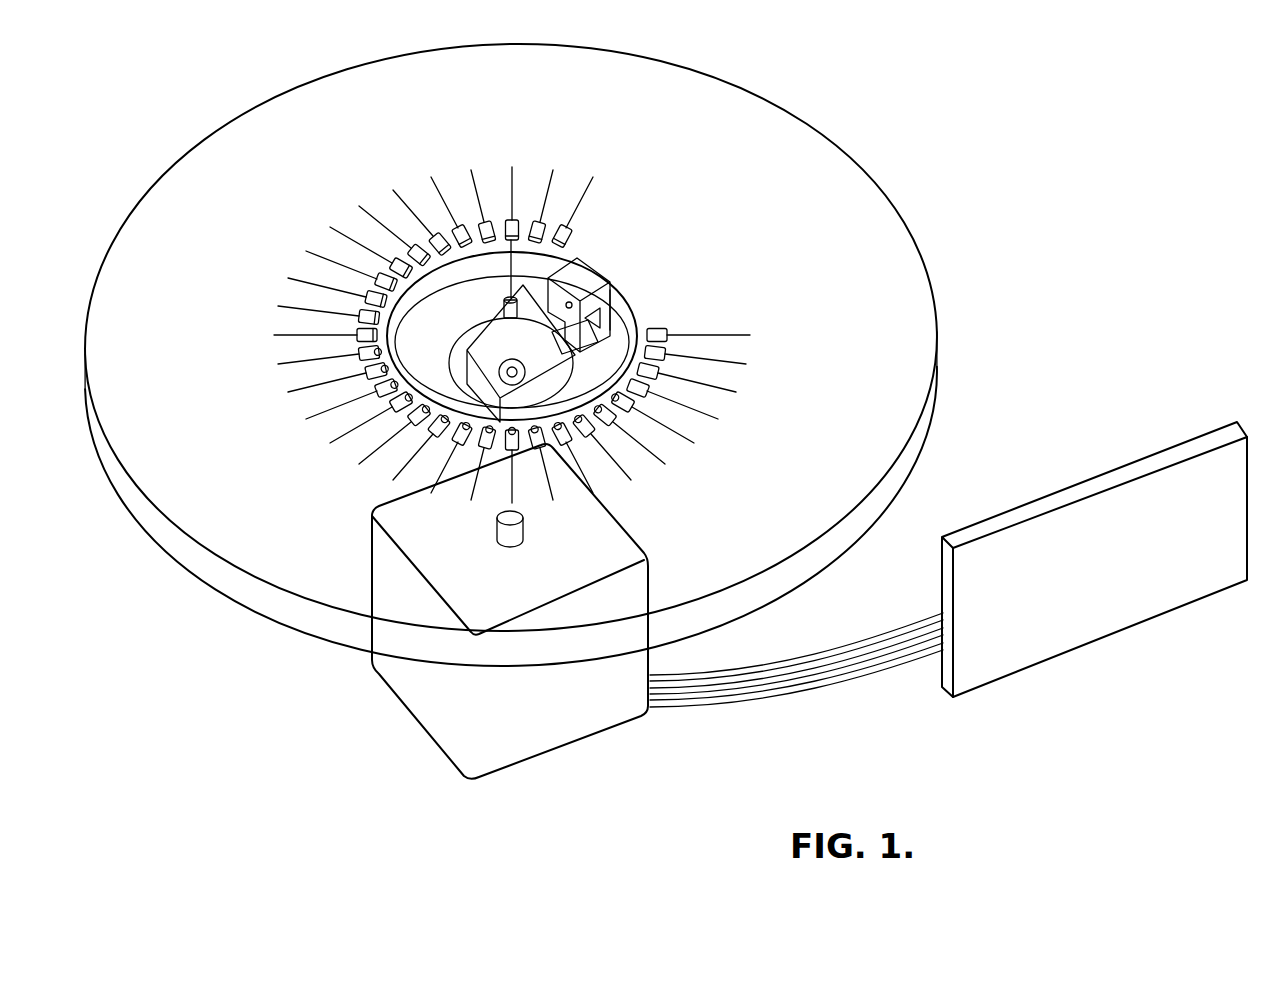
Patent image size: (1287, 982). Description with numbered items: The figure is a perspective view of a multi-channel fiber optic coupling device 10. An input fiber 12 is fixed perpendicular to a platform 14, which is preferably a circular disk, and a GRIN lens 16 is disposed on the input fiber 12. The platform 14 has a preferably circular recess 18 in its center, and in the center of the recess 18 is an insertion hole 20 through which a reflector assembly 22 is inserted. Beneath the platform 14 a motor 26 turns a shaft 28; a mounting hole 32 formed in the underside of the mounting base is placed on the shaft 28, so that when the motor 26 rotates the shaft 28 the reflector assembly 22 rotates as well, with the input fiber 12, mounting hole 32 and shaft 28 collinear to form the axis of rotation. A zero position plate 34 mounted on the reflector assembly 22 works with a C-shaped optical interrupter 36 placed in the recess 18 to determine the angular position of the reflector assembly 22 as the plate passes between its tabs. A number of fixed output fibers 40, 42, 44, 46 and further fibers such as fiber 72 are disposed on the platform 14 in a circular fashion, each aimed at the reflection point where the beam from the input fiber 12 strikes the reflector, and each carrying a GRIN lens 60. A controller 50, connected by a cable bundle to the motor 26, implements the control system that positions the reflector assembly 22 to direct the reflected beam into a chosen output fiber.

The multi-channel fiber optic coupling device 10 is at (957, 244).
The input fiber 12 is at (506, 284).
The platform 14 is at (182, 280).
The GRIN lens 16 is at (503, 311).
The recess 18 is at (614, 327).
The insertion hole 20 is at (470, 346).
The reflector assembly 22 is at (516, 396).
The motor 26 is at (430, 723).
The shaft 28 is at (497, 530).
The mounting hole 32 is at (464, 366).
The zero position plate 34 is at (566, 378).
The optical interrupter 36 is at (584, 276).
The output fiber 40 is at (750, 335).
The output fiber 42 is at (746, 364).
The output fiber 44 is at (736, 392).
The output fiber 46 is at (718, 419).
The controller 50 is at (1170, 600).
The GRIN lens 60 is at (572, 238).
The radial conductor 72 is at (590, 182).